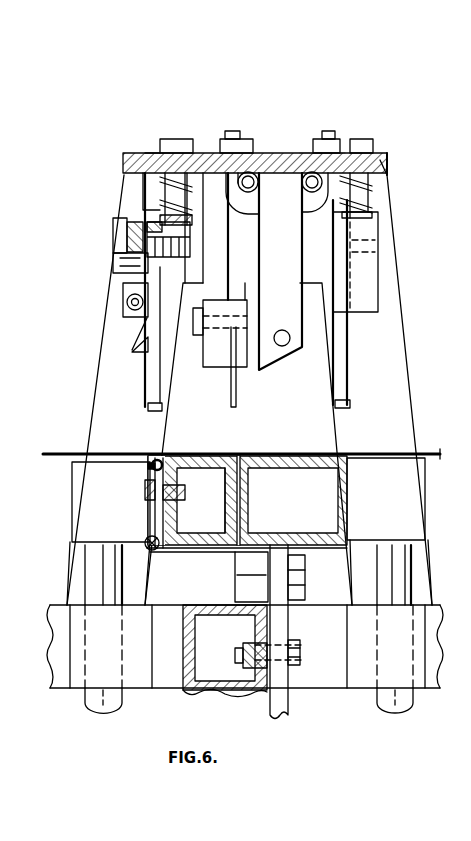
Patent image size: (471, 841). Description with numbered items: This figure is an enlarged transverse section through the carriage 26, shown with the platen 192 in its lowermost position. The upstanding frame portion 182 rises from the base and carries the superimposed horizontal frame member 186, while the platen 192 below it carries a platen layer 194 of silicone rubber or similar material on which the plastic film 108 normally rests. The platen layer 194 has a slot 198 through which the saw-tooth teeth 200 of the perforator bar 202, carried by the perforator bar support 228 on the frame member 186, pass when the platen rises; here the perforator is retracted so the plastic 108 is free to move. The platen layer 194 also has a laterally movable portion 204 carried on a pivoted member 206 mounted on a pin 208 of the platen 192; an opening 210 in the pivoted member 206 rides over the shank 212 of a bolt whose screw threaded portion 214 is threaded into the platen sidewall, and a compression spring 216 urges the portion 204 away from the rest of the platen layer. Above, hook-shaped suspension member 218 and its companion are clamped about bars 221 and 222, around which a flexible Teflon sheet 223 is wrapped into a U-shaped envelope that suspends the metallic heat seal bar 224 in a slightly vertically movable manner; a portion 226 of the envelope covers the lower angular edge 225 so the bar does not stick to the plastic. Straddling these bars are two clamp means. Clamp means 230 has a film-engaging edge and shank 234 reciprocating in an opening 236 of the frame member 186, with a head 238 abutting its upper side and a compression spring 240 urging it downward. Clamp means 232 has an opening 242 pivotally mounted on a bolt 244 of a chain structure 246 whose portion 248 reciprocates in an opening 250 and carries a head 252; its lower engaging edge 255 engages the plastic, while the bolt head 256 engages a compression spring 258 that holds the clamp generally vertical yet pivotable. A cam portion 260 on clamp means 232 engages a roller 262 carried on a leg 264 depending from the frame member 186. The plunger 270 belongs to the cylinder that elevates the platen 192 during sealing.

The carriage 26 is at (301, 147).
The plastic film 108 is at (440, 452).
The upstanding frame portion 182 is at (407, 380).
The superimposed horizontal frame member 186 is at (280, 152).
The platen 192 is at (343, 530).
The platen layer 194 is at (185, 455).
The slot 198 is at (248, 455).
The teeth 200 is at (234, 407).
The perforator bar 202 is at (238, 378).
The laterally movable portion 204 is at (157, 458).
The pivoted member 206 is at (155, 515).
The pin 208 is at (147, 540).
The opening 210 is at (150, 468).
The shank 212 is at (145, 490).
The screw threaded portion 214 is at (181, 492).
The compression spring 216 is at (175, 512).
The suspension member 218 is at (240, 138).
The bar 221 is at (221, 150).
The bar 222 is at (348, 185).
The sheet 223 is at (347, 340).
The heat seal bar 224 is at (298, 240).
The lower angular edge 225 is at (278, 369).
The portion of the envelope 226 is at (232, 374).
The perforator bar support 228 is at (242, 284).
The clamp means 230 is at (340, 303).
The clamp means 232 is at (128, 397).
The shank 234 is at (386, 176).
The opening 236 is at (388, 160).
The head 238 is at (373, 142).
The compression spring 240 is at (372, 200).
The opening 242 is at (128, 302).
The bolt 244 is at (217, 268).
The chain structure 246 is at (160, 228).
The portion 248 is at (130, 172).
The opening 250 is at (160, 150).
The head 252 is at (175, 147).
The lower engaging edge 255 is at (150, 407).
The head 256 is at (114, 238).
The compression spring 258 is at (118, 266).
The cam portion 260 is at (147, 350).
The roller 262 is at (144, 320).
The leg 264 is at (126, 295).
The plunger 270 is at (325, 163).